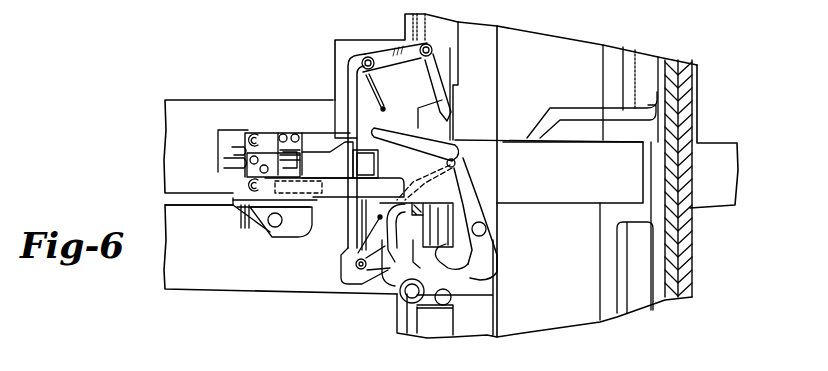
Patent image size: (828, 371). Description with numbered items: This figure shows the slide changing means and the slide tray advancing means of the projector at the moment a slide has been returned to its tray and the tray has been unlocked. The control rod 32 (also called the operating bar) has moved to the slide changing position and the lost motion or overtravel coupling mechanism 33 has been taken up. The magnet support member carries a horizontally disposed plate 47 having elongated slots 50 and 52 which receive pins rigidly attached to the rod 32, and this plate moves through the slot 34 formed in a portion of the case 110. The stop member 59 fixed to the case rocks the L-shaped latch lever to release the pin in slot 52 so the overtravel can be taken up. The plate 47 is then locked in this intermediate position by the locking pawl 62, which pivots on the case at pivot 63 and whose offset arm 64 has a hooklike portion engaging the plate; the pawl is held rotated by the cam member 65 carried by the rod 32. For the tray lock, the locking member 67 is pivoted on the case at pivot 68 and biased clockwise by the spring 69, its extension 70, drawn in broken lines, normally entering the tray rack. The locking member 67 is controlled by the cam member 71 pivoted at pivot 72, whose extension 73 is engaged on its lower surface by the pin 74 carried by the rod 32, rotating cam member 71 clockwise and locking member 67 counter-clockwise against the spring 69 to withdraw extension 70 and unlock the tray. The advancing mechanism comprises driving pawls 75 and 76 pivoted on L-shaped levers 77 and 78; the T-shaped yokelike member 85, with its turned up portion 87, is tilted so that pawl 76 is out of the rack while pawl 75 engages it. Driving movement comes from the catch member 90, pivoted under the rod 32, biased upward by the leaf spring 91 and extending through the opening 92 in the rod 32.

The control rod 32 is at (574, 178).
The lost motion or overtravel coupling mechanism 33 is at (227, 247).
The slot 34 is at (186, 205).
The plate 47 is at (217, 140).
The elongated slot 50 is at (226, 163).
The elongated slot 52 is at (240, 148).
The stop member 59 is at (252, 185).
The locking pawl 62 is at (291, 233).
The pivot 63 is at (271, 228).
The offset arm 64 is at (232, 205).
The cam member 65 is at (335, 203).
The locking member 67 is at (452, 296).
The pivot 68 is at (446, 302).
The spring 69 is at (401, 263).
The extension 70 is at (437, 208).
The cam member 71 is at (467, 193).
The pivot 72 is at (487, 229).
The extension 73 is at (406, 131).
The pin 74 is at (455, 161).
The driving pawl 75 is at (437, 78).
The driving pawl 76 is at (412, 212).
The L-shaped lever 77 is at (352, 90).
The L-shaped lever 78 is at (348, 238).
The T-shaped yokelike member 85 is at (581, 112).
The turned up portion 87 is at (595, 179).
The catch member 90 is at (337, 140).
The leaf spring 91 is at (311, 170).
The opening 92 is at (373, 150).
The case portion 110 is at (241, 100).